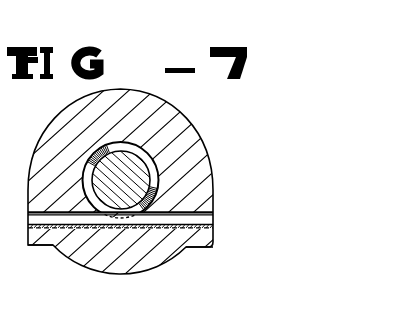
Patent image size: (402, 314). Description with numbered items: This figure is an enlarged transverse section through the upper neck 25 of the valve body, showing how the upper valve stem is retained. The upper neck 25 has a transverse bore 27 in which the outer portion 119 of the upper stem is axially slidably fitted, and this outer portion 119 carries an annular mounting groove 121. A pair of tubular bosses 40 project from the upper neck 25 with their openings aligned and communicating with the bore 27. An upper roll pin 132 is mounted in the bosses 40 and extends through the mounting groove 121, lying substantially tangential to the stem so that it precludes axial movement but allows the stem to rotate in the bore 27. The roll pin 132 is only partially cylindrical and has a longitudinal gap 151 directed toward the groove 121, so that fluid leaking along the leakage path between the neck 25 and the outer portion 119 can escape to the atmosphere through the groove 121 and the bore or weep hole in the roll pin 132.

The upper neck 25 is at (163, 101).
The bore 27 is at (98, 153).
The outer portion 119 is at (148, 173).
The annular mounting groove 121 is at (160, 184).
The longitudinal gap 151 is at (213, 213).
The roll pin 132 is at (213, 223).
The tubular bosses 40 is at (34, 245).